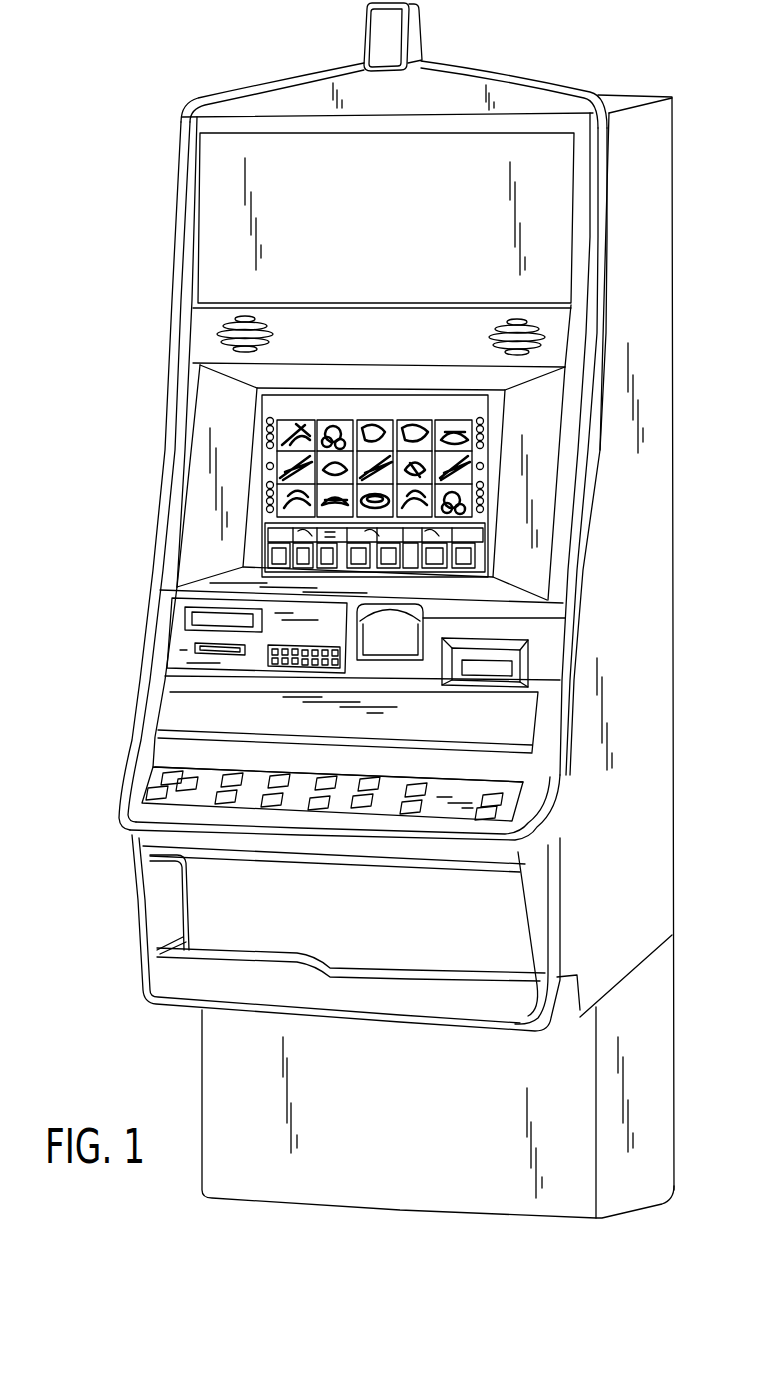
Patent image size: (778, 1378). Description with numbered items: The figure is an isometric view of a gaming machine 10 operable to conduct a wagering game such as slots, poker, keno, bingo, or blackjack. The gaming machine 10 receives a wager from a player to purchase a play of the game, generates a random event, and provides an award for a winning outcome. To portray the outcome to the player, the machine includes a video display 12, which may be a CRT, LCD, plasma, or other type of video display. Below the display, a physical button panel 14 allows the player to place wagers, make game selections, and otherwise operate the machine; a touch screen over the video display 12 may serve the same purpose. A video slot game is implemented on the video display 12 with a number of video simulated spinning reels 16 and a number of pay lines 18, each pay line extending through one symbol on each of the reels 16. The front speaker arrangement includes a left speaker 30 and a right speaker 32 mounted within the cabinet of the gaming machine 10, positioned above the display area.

The gaming machine 10 is at (128, 116).
The video display 12 is at (253, 457).
The button panel 14 is at (218, 780).
The video simulated spinning reels 16 is at (452, 428).
The pay lines 18 is at (266, 429).
The left speaker 30 is at (216, 330).
The right speaker 32 is at (545, 334).